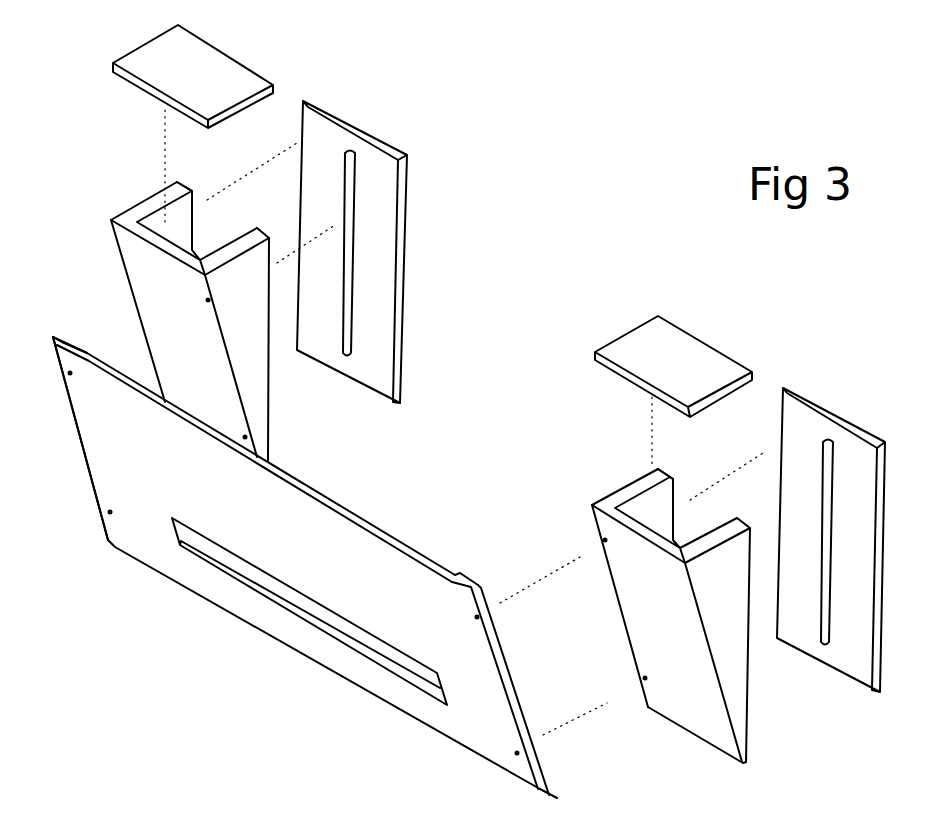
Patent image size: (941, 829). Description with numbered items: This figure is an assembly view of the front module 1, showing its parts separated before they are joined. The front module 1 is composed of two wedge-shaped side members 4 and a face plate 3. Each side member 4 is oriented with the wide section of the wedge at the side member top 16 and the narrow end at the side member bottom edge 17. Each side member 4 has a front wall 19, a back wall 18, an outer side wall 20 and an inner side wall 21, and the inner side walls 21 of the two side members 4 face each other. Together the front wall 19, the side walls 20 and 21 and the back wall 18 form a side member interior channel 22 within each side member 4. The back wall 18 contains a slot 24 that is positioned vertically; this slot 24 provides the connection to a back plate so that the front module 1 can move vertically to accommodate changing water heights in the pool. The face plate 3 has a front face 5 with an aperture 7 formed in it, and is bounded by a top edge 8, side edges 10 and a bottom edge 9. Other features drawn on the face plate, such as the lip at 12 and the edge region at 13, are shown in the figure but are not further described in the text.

The front module 1 is at (464, 422).
The face plate 3 is at (305, 567).
The side members 4 is at (396, 372).
The front face 5 is at (294, 563).
The aperture 7 is at (258, 585).
The top edge 8 is at (53, 337).
The bottom edge 9 is at (466, 580).
The side edges 10 is at (83, 443).
The top lip 12 is at (85, 352).
The top edge 13 is at (372, 508).
The side member top 16 is at (432, 221).
The side member bottom edge 17 is at (700, 743).
The back wall 18 is at (330, 124).
The front wall 19 is at (426, 491).
The outer side wall 20 is at (142, 200).
The inner side wall 21 is at (628, 495).
The side member interior channel 22 is at (437, 377).
The slot 24 is at (343, 185).